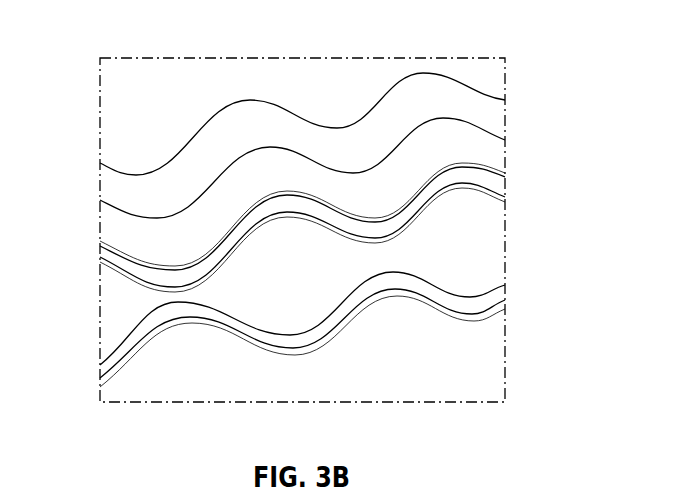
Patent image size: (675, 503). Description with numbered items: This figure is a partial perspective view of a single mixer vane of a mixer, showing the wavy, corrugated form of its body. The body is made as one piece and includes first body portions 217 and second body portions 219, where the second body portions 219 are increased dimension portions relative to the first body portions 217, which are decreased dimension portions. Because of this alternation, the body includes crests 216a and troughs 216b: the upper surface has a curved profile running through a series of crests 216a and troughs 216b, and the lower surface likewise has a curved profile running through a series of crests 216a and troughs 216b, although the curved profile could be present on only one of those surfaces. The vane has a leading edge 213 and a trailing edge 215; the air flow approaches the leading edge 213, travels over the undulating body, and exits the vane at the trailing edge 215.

The leading edge 213 is at (131, 296).
The trailing edge 215 is at (121, 164).
The crests 216a is at (247, 100).
The troughs 216b is at (138, 174).
The first body portions 217 is at (173, 328).
The second body portions 219 is at (108, 343).